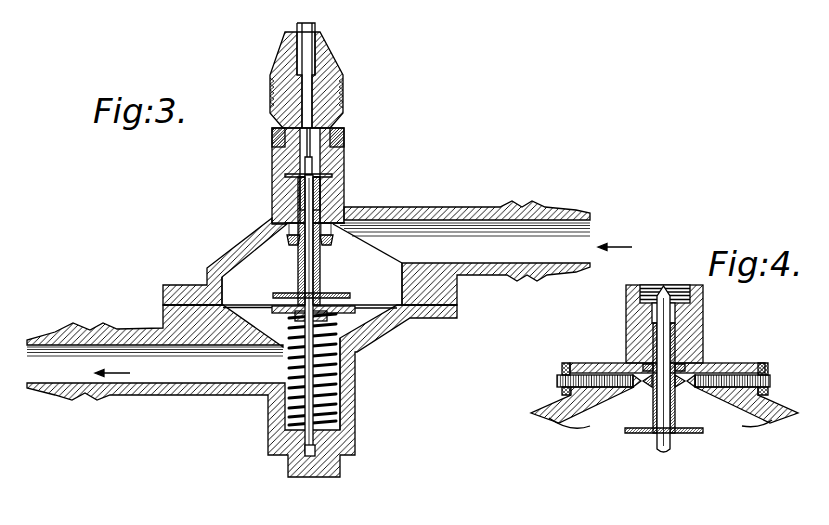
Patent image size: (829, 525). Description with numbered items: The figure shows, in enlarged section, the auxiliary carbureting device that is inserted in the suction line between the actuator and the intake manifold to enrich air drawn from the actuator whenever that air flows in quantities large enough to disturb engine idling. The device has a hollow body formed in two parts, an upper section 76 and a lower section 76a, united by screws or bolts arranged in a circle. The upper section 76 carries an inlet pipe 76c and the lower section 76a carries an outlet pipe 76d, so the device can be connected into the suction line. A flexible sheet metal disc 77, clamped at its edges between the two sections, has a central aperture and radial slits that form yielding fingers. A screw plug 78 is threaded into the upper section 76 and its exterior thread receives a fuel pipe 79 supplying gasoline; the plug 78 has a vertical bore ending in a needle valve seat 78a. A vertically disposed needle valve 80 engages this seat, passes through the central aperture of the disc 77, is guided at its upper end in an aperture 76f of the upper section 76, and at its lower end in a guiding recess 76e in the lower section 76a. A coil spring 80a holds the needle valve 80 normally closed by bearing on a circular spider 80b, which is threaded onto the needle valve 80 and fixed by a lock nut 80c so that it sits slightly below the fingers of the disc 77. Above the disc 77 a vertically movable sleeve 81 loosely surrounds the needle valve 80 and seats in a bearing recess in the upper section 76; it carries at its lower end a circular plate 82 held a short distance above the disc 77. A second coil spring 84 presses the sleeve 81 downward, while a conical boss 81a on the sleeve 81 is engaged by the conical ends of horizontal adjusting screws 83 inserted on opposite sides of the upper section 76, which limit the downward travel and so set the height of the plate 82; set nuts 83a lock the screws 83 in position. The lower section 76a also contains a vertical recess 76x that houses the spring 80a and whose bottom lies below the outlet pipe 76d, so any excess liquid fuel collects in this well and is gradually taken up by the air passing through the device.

In FIG. 3, the upper body section 76 is at (251, 252).
In FIG. 4, the upper body section 76 is at (560, 416).
In FIG. 3, the lower body section 76a is at (373, 333).
In FIG. 3, the inlet pipe 76c is at (463, 248).
In FIG. 3, the outlet pipe 76d is at (63, 378).
In FIG. 3, the guiding recess 76e is at (316, 452).
In FIG. 3, the guiding aperture 76f is at (298, 183).
In FIG. 4, the guiding aperture 76f is at (637, 312).
In FIG. 3, the spring recess 76x is at (338, 418).
In FIG. 3, the flexible disc 77 is at (252, 305).
In FIG. 3, the screw plug 78 is at (345, 130).
In FIG. 3, the needle valve seat 78a is at (288, 166).
In FIG. 3, the fuel supply pipe 79 is at (316, 25).
In FIG. 3, the needle valve 80 is at (345, 180).
In FIG. 4, the needle valve 80 is at (677, 312).
In FIG. 3, the coil spring 80a is at (293, 420).
In FIG. 3, the circular spider 80b is at (343, 311).
In FIG. 3, the lock nut 80c is at (296, 316).
In FIG. 3, the sleeve 81 is at (300, 279).
In FIG. 4, the sleeve 81 is at (653, 418).
In FIG. 3, the conical boss 81a is at (293, 245).
In FIG. 4, the conical boss 81a is at (654, 389).
In FIG. 3, the circular plate 82 is at (346, 295).
In FIG. 4, the circular plate 82 is at (700, 428).
In FIG. 4, the adjusting screws 83 is at (557, 379).
In FIG. 4, the set nuts 83a is at (566, 363).
In FIG. 3, the coil spring 84 is at (326, 228).